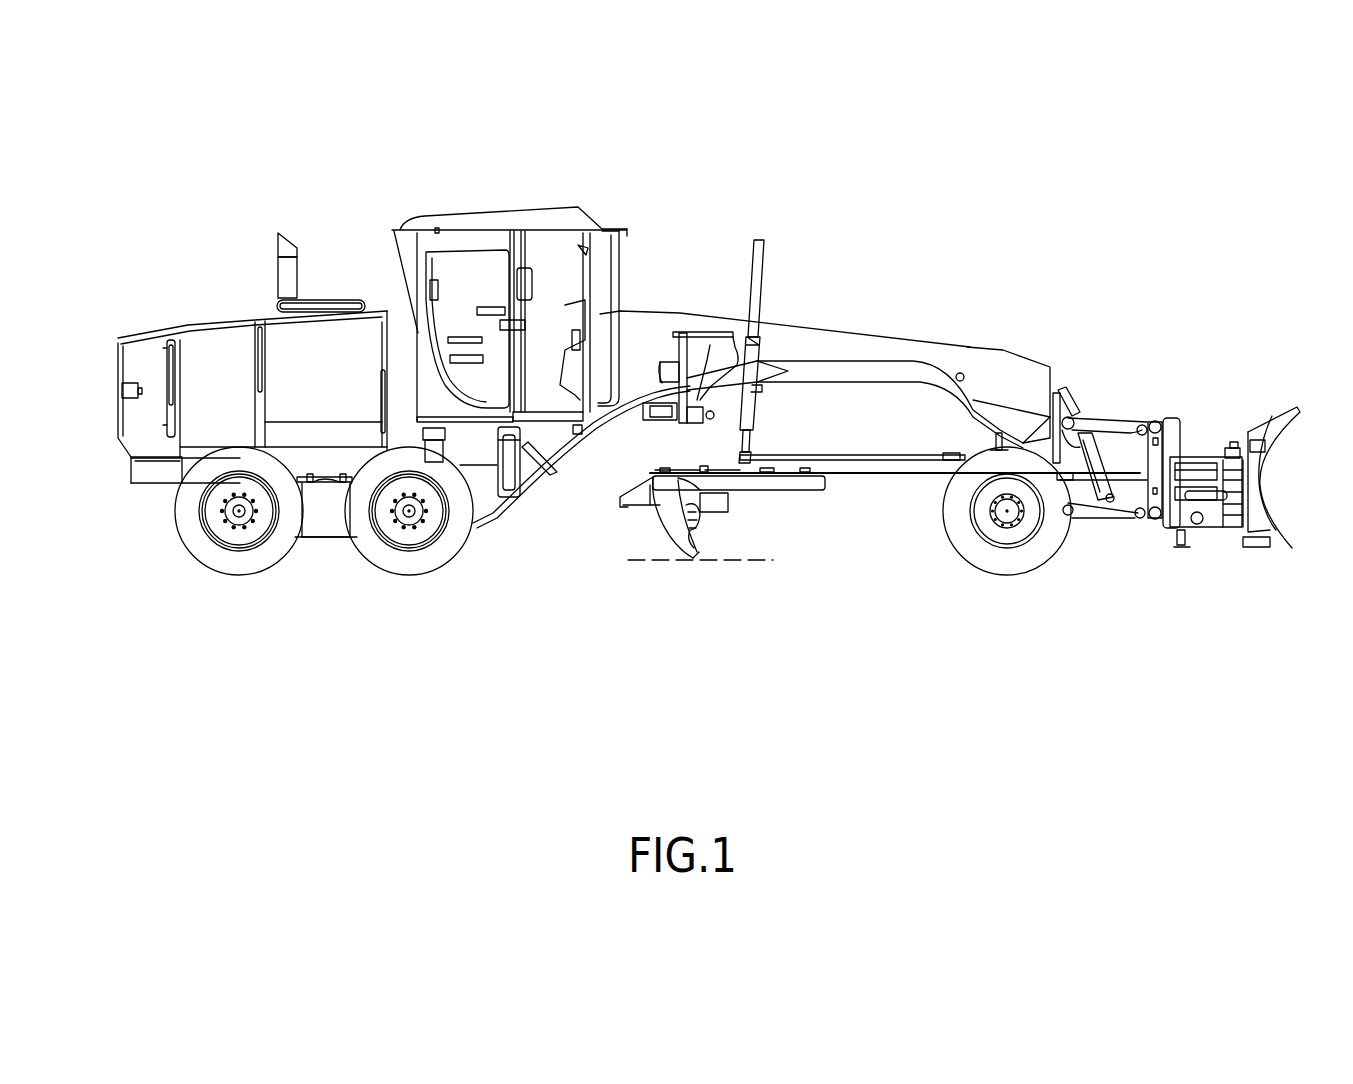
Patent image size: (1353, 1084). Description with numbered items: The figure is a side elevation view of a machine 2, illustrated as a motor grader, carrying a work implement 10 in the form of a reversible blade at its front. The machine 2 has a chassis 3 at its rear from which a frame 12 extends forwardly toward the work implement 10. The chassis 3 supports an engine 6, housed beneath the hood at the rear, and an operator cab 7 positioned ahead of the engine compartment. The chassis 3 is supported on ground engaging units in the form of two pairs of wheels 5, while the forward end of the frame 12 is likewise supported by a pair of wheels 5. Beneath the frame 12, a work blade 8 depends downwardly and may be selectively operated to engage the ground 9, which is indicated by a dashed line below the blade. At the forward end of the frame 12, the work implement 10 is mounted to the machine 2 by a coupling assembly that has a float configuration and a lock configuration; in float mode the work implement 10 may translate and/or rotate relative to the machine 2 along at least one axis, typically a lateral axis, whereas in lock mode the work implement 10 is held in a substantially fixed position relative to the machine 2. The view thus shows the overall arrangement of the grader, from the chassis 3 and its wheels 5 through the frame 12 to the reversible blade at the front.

The machine 2 is at (676, 208).
The chassis 3 is at (320, 522).
The wheels 5 is at (227, 558).
The engine 6 is at (317, 348).
The operator cab 7 is at (468, 247).
The work blade 8 is at (677, 525).
The ground 9 is at (673, 563).
The work implement 10 is at (1263, 410).
The frame 12 is at (823, 348).